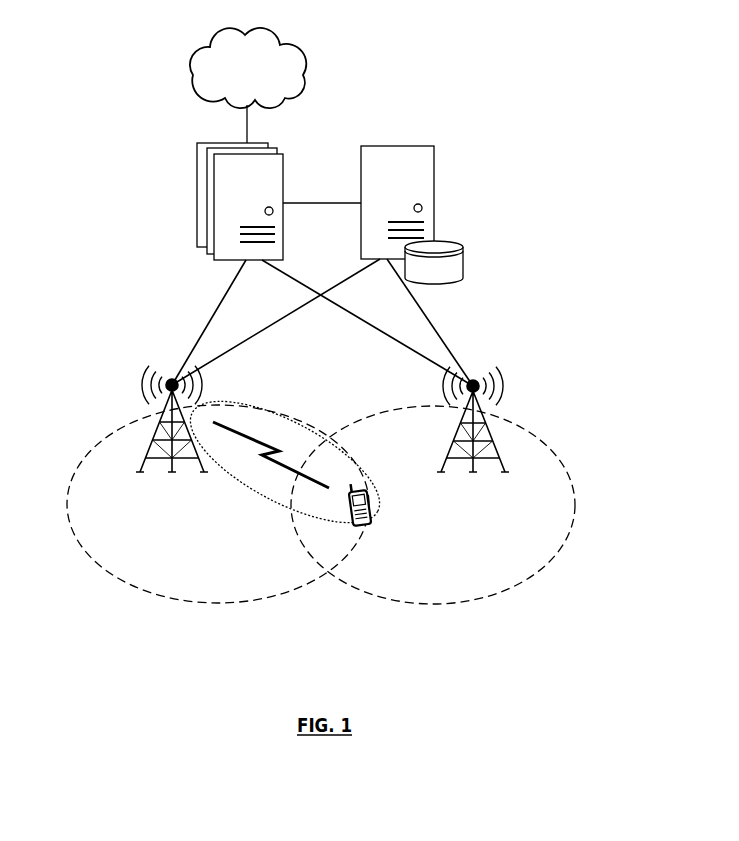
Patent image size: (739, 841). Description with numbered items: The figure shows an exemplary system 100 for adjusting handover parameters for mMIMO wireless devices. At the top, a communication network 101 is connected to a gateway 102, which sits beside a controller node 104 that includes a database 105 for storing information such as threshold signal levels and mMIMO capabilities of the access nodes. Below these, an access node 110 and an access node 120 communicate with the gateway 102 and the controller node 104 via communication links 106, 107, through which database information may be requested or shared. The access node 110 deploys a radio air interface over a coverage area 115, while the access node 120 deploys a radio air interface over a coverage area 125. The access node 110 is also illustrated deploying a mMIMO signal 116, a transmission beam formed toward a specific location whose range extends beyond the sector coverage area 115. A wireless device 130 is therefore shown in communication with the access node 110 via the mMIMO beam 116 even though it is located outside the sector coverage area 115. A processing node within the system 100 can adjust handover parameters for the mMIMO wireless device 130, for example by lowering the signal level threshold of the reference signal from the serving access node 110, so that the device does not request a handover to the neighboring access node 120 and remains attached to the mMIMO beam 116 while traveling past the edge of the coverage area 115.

The system 100 is at (381, 37).
The communication network 101 is at (263, 80).
The gateway 102 is at (197, 176).
The controller node 104 is at (434, 190).
The database 105 is at (463, 262).
The communication link 106 is at (304, 288).
The communication link 107 is at (272, 326).
The access node 110 is at (151, 445).
The coverage area 115 is at (110, 574).
The mMIMO signal 116 is at (267, 497).
The access node 120 is at (495, 450).
The coverage area 125 is at (527, 579).
The wireless device 130 is at (372, 517).